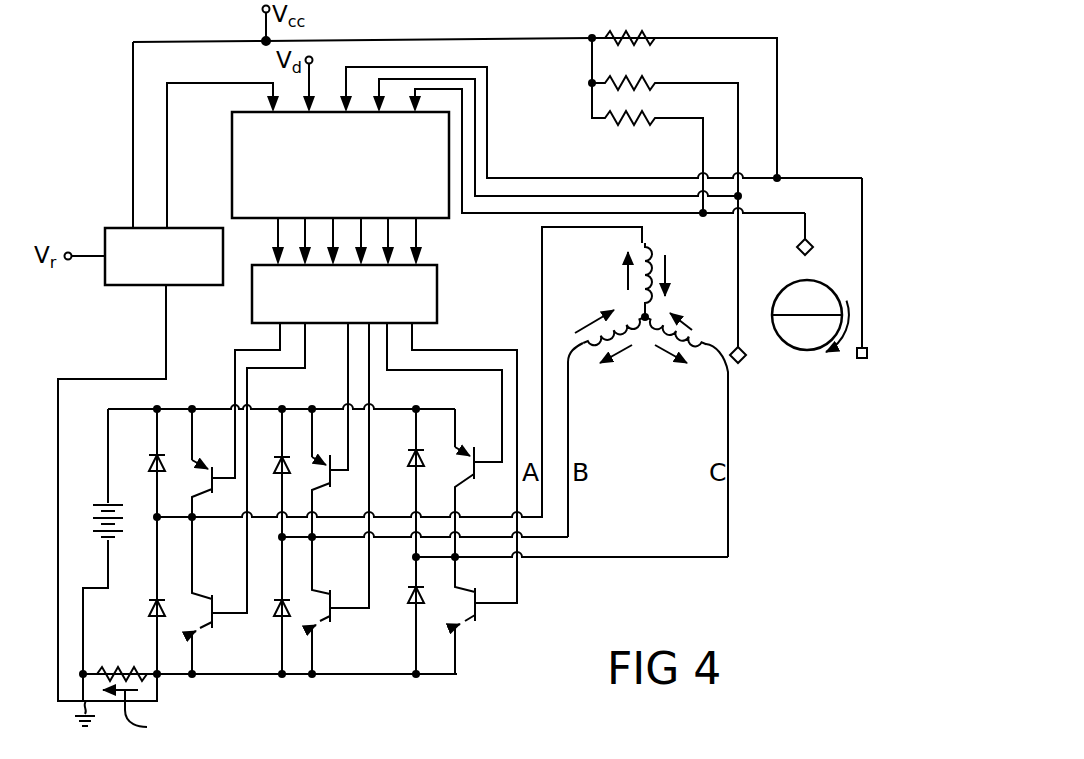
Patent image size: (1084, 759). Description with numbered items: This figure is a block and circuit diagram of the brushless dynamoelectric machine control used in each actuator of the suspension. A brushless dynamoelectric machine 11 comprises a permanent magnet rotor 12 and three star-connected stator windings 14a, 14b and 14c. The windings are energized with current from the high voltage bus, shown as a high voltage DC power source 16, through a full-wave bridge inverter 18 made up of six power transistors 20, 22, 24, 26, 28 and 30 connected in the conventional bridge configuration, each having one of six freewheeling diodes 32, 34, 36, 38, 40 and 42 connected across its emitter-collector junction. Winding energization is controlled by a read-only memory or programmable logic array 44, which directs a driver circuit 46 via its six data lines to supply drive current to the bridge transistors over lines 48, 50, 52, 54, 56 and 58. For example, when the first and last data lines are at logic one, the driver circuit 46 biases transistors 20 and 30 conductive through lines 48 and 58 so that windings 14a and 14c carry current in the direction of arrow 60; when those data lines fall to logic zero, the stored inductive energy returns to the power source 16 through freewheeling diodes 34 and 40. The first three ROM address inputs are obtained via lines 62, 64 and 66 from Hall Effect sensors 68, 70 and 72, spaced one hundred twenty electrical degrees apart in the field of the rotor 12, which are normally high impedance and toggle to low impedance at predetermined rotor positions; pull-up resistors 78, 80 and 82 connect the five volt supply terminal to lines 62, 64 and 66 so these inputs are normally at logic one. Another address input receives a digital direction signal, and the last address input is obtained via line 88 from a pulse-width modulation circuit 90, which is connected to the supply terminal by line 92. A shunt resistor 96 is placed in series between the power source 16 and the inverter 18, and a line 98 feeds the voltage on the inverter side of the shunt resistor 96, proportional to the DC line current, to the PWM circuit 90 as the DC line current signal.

The brushless dynamoelectric machine 11 is at (770, 437).
The permanent magnet rotor 12 is at (808, 352).
The stator winding 14a is at (650, 247).
The stator winding 14b is at (585, 365).
The stator winding 14c is at (718, 375).
The high voltage DC power source 16 is at (105, 503).
The full-wave bridge inverter 18 is at (530, 580).
The power transistor 20 is at (206, 464).
The power transistor 22 is at (214, 597).
The power transistor 24 is at (320, 465).
The power transistor 26 is at (333, 600).
The power transistor 28 is at (478, 458).
The power transistor 30 is at (480, 610).
The freewheeling diode 32 is at (148, 463).
The freewheeling diode 34 is at (150, 608).
The freewheeling diode 36 is at (278, 463).
The freewheeling diode 38 is at (275, 612).
The freewheeling diode 40 is at (410, 462).
The freewheeling diode 42 is at (410, 605).
The read-only memory 44 is at (433, 219).
The driver circuit 46 is at (438, 311).
The drive line 48 is at (233, 349).
The drive line 50 is at (258, 368).
The drive line 52 is at (347, 380).
The drive line 54 is at (370, 377).
The drive line 56 is at (452, 372).
The drive line 58 is at (477, 350).
The arrow 60 is at (708, 300).
The address input line 62 is at (513, 214).
The address input line 64 is at (557, 228).
The address input line 66 is at (642, 177).
The sensor 68 is at (808, 229).
The sensor 70 is at (745, 362).
The sensor 72 is at (863, 360).
The pull-up resistor 78 is at (640, 115).
The pull-up resistor 80 is at (640, 80).
The pull-up resistor 82 is at (648, 40).
The line 88 is at (205, 84).
The pulse-width modulation circuit 90 is at (187, 228).
The line 92 is at (133, 138).
The shunt resistor 96 is at (105, 674).
The line 98 is at (122, 379).